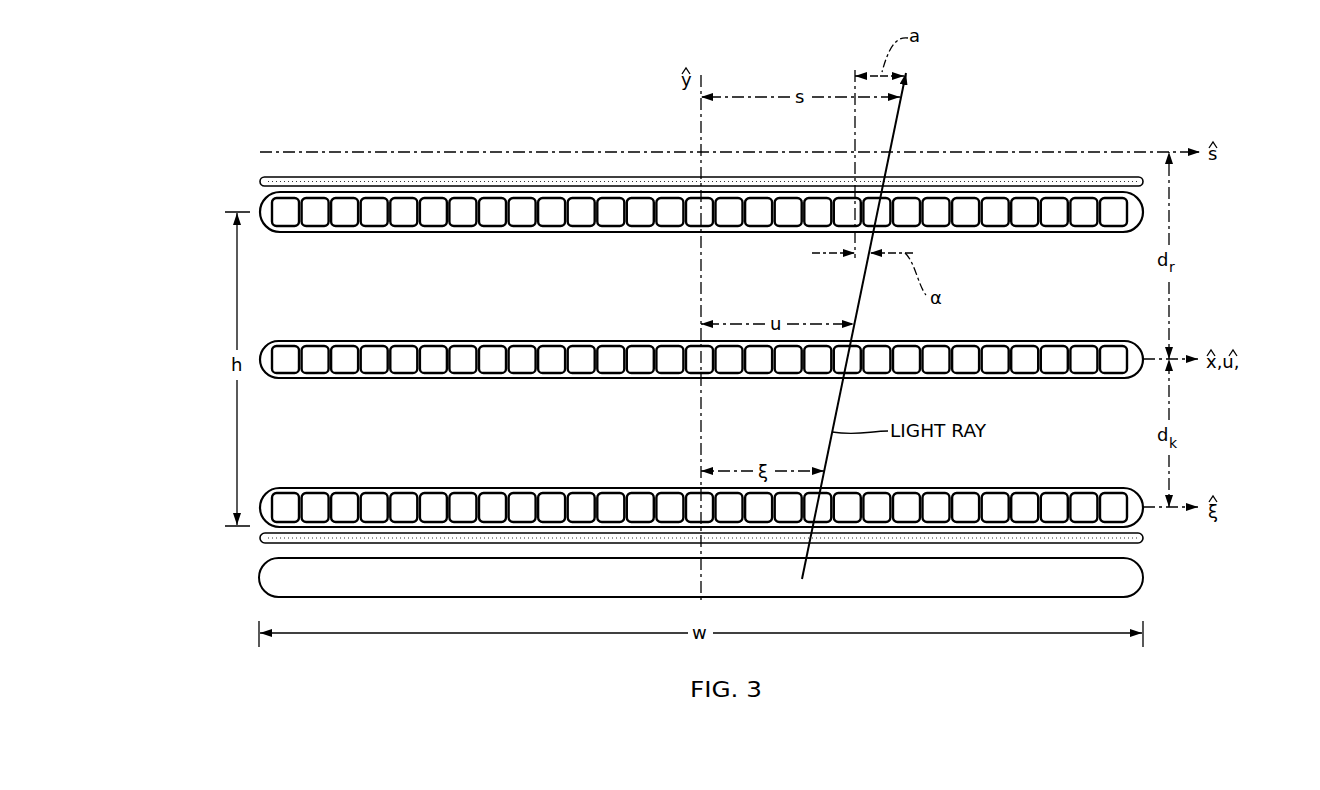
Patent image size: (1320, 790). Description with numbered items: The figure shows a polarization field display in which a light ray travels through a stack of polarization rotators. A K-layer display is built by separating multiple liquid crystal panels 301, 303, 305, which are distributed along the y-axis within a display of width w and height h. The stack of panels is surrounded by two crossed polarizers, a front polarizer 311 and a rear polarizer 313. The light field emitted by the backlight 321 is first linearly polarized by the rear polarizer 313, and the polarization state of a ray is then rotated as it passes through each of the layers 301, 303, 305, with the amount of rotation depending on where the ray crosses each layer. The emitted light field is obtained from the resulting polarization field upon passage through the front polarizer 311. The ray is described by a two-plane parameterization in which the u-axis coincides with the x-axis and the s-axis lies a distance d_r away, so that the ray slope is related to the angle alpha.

The liquid crystal panel 301 is at (293, 240).
The liquid crystal panel 303 is at (292, 335).
The liquid crystal panel 305 is at (292, 485).
The front polarizer 311 is at (260, 182).
The rear polarizer 313 is at (260, 538).
The backlight 321 is at (259, 577).